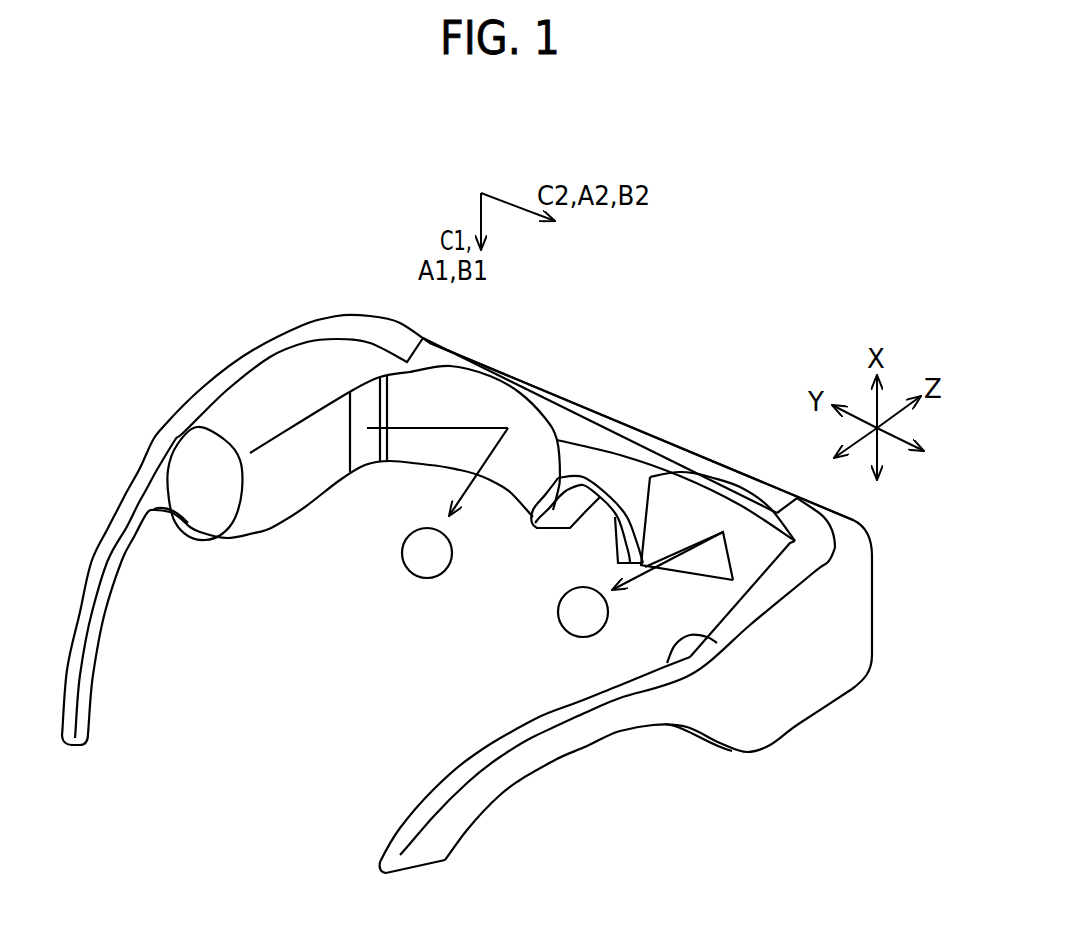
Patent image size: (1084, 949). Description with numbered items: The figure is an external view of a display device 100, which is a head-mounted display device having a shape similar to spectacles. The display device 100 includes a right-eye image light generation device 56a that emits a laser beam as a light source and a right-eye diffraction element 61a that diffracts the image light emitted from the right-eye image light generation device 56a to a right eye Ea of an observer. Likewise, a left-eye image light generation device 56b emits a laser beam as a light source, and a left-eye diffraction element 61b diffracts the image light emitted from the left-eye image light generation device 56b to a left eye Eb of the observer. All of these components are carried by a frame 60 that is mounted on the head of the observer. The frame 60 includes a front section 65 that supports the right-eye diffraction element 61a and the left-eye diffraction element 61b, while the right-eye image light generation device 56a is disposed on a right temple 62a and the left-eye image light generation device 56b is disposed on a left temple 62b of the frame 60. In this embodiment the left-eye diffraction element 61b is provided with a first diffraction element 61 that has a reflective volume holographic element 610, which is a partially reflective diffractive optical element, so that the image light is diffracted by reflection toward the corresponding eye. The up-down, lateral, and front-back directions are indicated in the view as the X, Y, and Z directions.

The display device 100 is at (810, 316).
The frame 60 is at (164, 419).
The front section 65 is at (600, 407).
The right-eye image light generation device 56a is at (735, 618).
The left-eye image light generation device 56b is at (293, 380).
The right temple 62a is at (707, 667).
The left temple 62b is at (202, 390).
The first diffraction element 61 is at (602, 449).
The reflective volume holographic element 610 is at (602, 449).
The right-eye diffraction element 61a is at (700, 493).
The left-eye diffraction element 61b is at (492, 400).
The right eye Ea is at (565, 633).
The left eye Eb is at (408, 571).